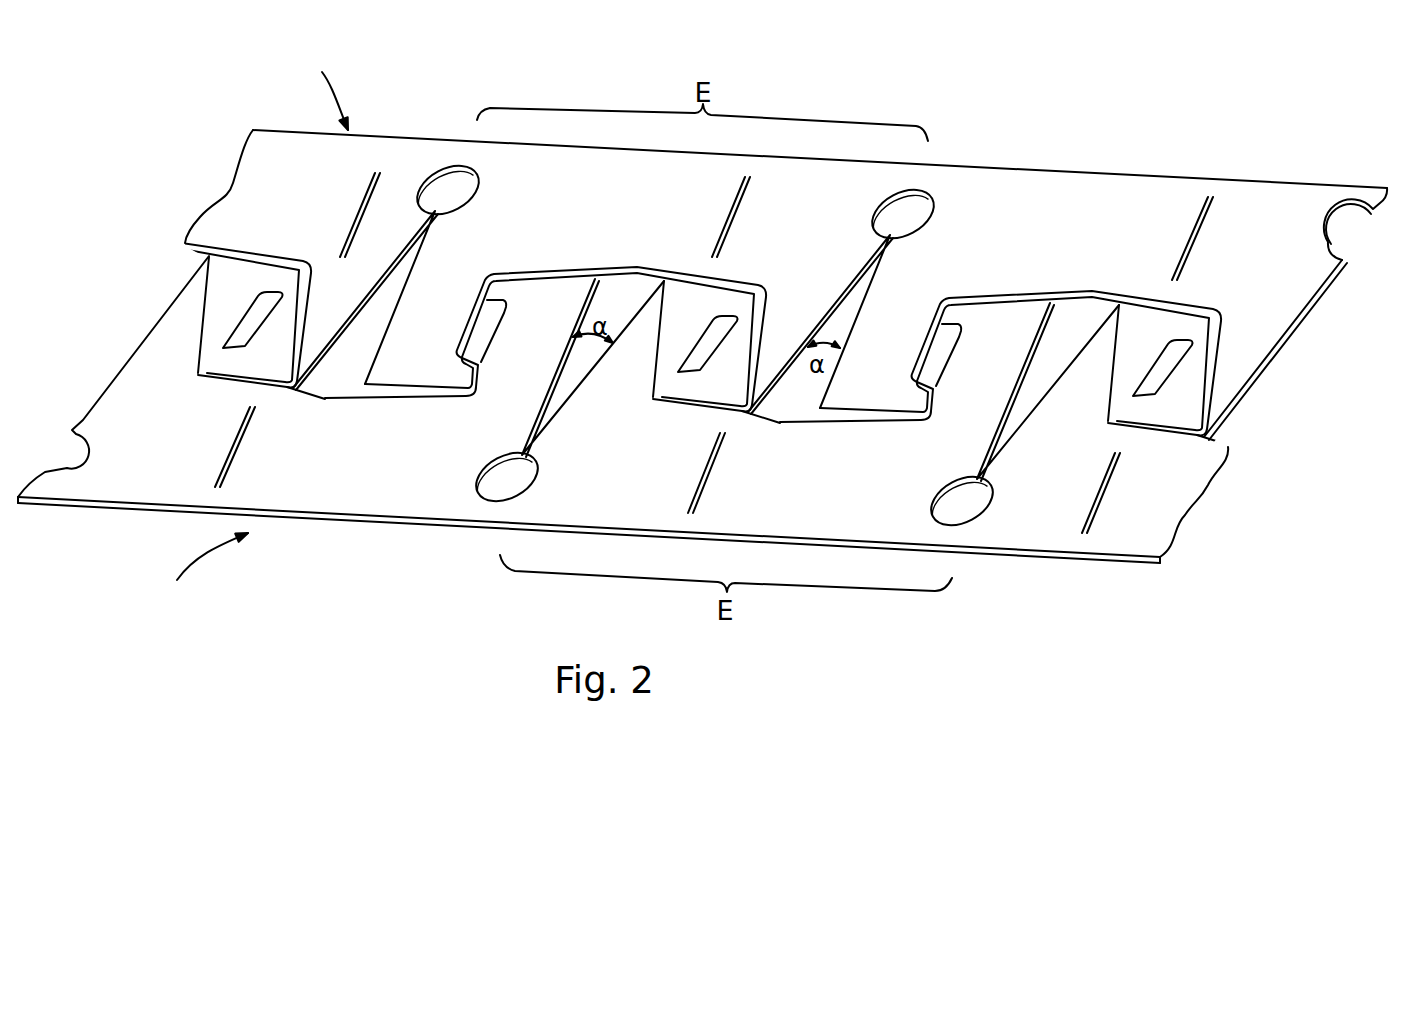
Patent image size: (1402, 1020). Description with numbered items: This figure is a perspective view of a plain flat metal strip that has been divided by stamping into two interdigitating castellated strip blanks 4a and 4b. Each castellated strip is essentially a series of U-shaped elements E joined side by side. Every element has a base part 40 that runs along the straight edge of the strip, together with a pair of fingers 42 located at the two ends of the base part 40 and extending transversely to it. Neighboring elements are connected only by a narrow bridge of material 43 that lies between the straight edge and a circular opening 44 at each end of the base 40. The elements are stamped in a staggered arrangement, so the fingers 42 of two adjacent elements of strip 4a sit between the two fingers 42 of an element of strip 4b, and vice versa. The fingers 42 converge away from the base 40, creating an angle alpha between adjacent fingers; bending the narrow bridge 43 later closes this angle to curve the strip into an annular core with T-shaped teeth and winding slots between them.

The base part 40 is at (415, 334).
The fingers 42 is at (282, 341).
The narrow bridge of material 43 is at (1362, 203).
The circular opening 44 is at (908, 213).
The castellated strip 4a is at (200, 571).
The castellated strip 4b is at (317, 89).